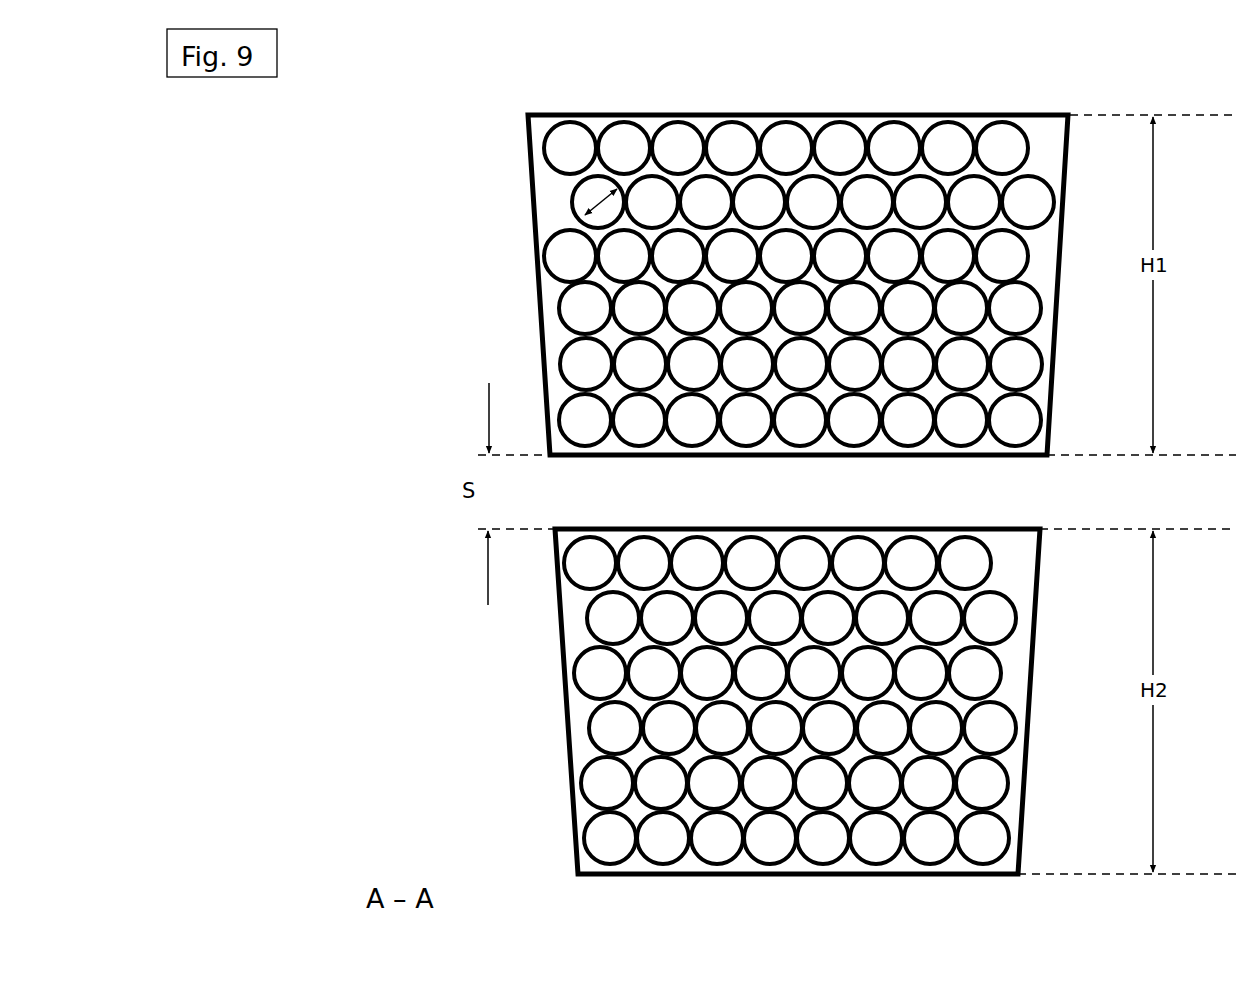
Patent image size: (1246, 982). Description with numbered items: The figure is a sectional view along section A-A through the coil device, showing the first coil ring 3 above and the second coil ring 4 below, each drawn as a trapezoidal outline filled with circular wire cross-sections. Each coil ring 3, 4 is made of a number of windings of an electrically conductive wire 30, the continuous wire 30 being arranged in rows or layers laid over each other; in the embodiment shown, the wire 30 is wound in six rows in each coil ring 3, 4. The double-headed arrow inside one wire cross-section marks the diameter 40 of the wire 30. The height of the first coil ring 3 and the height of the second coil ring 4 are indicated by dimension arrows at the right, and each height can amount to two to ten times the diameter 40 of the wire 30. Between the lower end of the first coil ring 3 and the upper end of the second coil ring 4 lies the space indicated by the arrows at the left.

The first coil ring 3 is at (812, 113).
The second coil ring 4 is at (823, 877).
The electrically conductive wire 30 is at (583, 363).
The diameter 40 is at (592, 197).